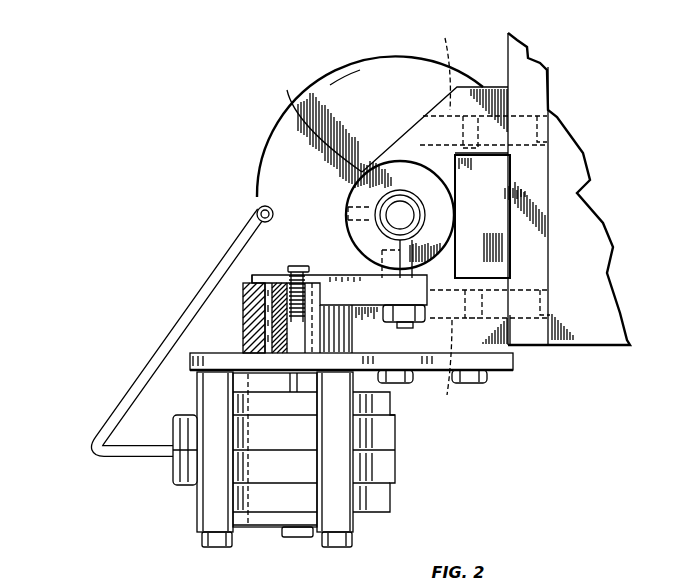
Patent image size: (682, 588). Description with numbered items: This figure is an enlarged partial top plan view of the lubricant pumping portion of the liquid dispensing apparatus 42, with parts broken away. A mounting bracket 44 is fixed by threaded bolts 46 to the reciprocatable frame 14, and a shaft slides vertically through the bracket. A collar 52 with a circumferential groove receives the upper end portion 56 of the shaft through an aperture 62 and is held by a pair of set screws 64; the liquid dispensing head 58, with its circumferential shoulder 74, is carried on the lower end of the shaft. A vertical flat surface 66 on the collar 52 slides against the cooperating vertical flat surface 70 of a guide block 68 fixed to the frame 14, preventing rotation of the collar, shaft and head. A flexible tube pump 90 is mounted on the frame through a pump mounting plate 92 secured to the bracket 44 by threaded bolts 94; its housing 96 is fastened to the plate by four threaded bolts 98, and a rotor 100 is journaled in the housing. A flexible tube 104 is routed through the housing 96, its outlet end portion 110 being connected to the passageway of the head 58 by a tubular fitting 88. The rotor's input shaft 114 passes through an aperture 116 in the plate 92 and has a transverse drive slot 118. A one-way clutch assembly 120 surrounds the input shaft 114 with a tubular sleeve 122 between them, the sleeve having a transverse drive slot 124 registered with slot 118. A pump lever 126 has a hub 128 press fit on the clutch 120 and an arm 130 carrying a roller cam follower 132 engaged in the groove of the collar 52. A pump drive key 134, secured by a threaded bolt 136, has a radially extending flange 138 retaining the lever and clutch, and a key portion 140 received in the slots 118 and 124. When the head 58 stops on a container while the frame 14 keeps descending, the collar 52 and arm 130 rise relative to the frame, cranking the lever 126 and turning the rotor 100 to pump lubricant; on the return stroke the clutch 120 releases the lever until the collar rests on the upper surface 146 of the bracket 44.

The reciprocatable frame 14 is at (540, 88).
The liquid dispensing apparatus 42 is at (264, 141).
The mounting bracket 44 is at (415, 137).
The threaded bolts 46 is at (481, 212).
The collar 52 is at (332, 129).
The upper end portion 56 is at (402, 213).
The liquid dispensing head 58 is at (383, 63).
The aperture 62 is at (422, 212).
The set screws 64 is at (351, 232).
The vertical flat surface 66 is at (449, 222).
The guide block 68 is at (503, 182).
The cooperating vertical flat surface 70 is at (426, 228).
The circumferential shoulder 74 is at (348, 68).
The tubular fitting 88 is at (258, 207).
The flexible tube pump 90 is at (395, 435).
The pump mounting plate 92 is at (517, 365).
The threaded bolts 94 is at (402, 384).
The housing 96 is at (253, 475).
The threaded bolts 98 is at (200, 540).
The rotor 100 is at (292, 538).
The flexible tube 104 is at (90, 450).
The outlet end portion 110 is at (260, 211).
The input shaft 114 is at (268, 320).
The aperture 116 is at (307, 378).
The transverse drive slot 118 is at (272, 272).
The one-way clutch assembly 120 is at (262, 332).
The tubular sleeve 122 is at (257, 356).
The transverse drive slot 124 is at (250, 273).
The pump lever 126 is at (352, 345).
The hub 128 is at (170, 332).
The arm 130 is at (383, 310).
The roller cam follower 132 is at (430, 278).
The pump drive key 134 is at (320, 274).
The threaded bolt 136 is at (292, 265).
The radially extending flange 138 is at (250, 278).
The key portion 140 is at (295, 374).
The upper surface 146 is at (470, 90).